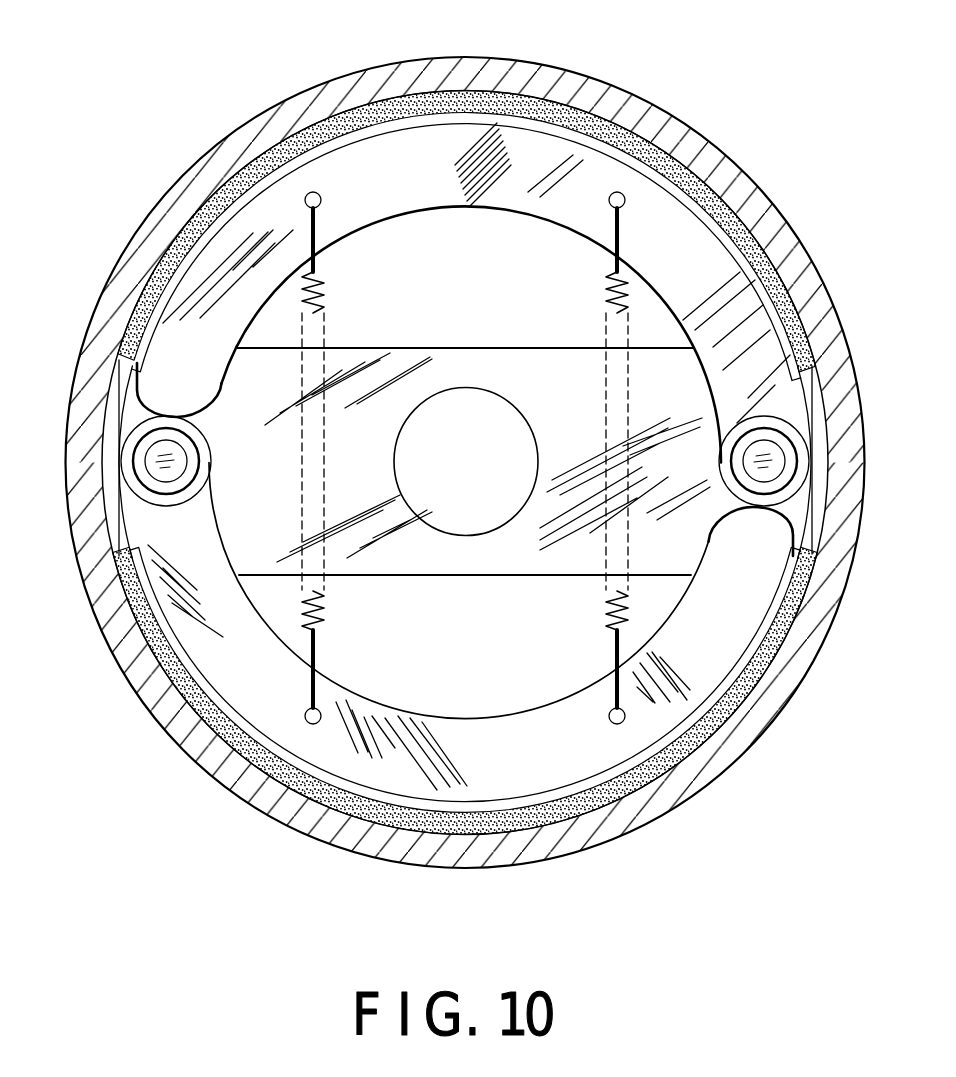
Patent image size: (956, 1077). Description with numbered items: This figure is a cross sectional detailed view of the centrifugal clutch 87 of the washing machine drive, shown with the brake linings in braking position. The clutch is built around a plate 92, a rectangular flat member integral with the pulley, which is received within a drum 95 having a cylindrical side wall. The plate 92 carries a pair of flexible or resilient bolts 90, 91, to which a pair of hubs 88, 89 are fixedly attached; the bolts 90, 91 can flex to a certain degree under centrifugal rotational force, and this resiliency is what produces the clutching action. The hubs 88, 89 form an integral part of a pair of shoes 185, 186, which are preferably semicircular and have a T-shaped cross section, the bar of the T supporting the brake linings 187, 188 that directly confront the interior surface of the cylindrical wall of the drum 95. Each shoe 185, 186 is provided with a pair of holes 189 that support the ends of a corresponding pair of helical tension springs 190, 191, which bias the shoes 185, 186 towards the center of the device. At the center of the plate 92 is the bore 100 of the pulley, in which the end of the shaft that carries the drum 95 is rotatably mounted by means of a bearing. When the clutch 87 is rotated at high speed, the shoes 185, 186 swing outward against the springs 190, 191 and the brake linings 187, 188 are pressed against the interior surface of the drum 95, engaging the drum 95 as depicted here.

The centrifugal clutch 87 is at (441, 881).
The drum 95 is at (661, 808).
The shoe 186 is at (508, 140).
The brake lining 188 is at (291, 138).
The brake lining 187 is at (240, 745).
The shoe 185 is at (320, 766).
The holes 189 is at (608, 198).
The helical tension spring 190 is at (320, 312).
The helical tension spring 191 is at (606, 308).
The plate 92 is at (447, 360).
The bore 100 is at (397, 475).
The hub 88 is at (183, 439).
The hub 89 is at (754, 439).
The resilient bolt 90 is at (176, 463).
The resilient bolt 91 is at (755, 463).